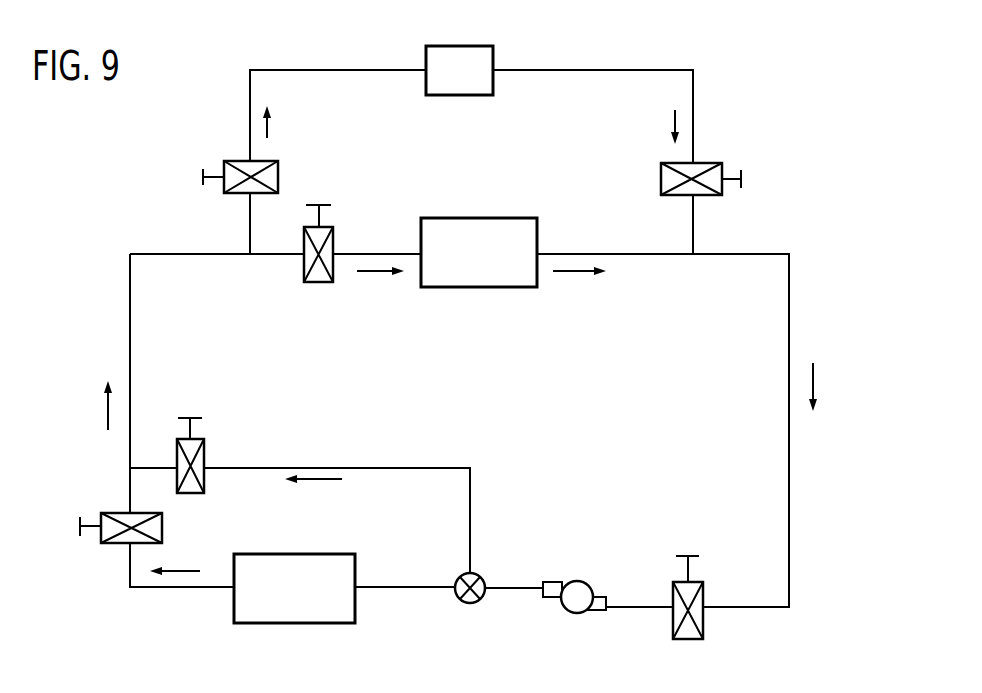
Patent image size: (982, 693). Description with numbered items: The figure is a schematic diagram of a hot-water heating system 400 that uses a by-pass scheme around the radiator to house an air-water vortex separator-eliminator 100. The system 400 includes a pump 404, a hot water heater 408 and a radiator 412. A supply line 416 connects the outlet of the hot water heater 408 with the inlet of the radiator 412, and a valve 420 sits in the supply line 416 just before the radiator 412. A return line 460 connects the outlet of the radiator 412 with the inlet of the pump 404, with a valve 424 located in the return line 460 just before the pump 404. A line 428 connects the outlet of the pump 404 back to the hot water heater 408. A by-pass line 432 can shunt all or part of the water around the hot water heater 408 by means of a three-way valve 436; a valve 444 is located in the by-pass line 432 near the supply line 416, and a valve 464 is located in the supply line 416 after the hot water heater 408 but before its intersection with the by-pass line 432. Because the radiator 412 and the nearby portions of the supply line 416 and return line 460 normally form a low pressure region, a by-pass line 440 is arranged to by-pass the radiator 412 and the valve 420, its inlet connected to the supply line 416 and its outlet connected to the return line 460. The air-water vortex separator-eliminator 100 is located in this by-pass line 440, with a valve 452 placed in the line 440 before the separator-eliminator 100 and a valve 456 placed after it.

The air-water vortex separator-eliminator 100 is at (428, 58).
The hot-water heating system 400 is at (790, 342).
The pump 404 is at (577, 615).
The hot water heater 408 is at (272, 625).
The radiator 412 is at (498, 289).
The supply line 416 is at (360, 252).
The valve 420 is at (328, 284).
The valve 424 is at (705, 637).
The line 428 is at (411, 592).
The by-pass line 432 is at (153, 465).
The three-way valve 436 is at (489, 580).
The by-pass line 440 is at (299, 68).
The valve 444 is at (206, 455).
The valve 452 is at (225, 160).
The valve 456 is at (706, 162).
The return line 460 is at (645, 258).
The valve 464 is at (105, 545).